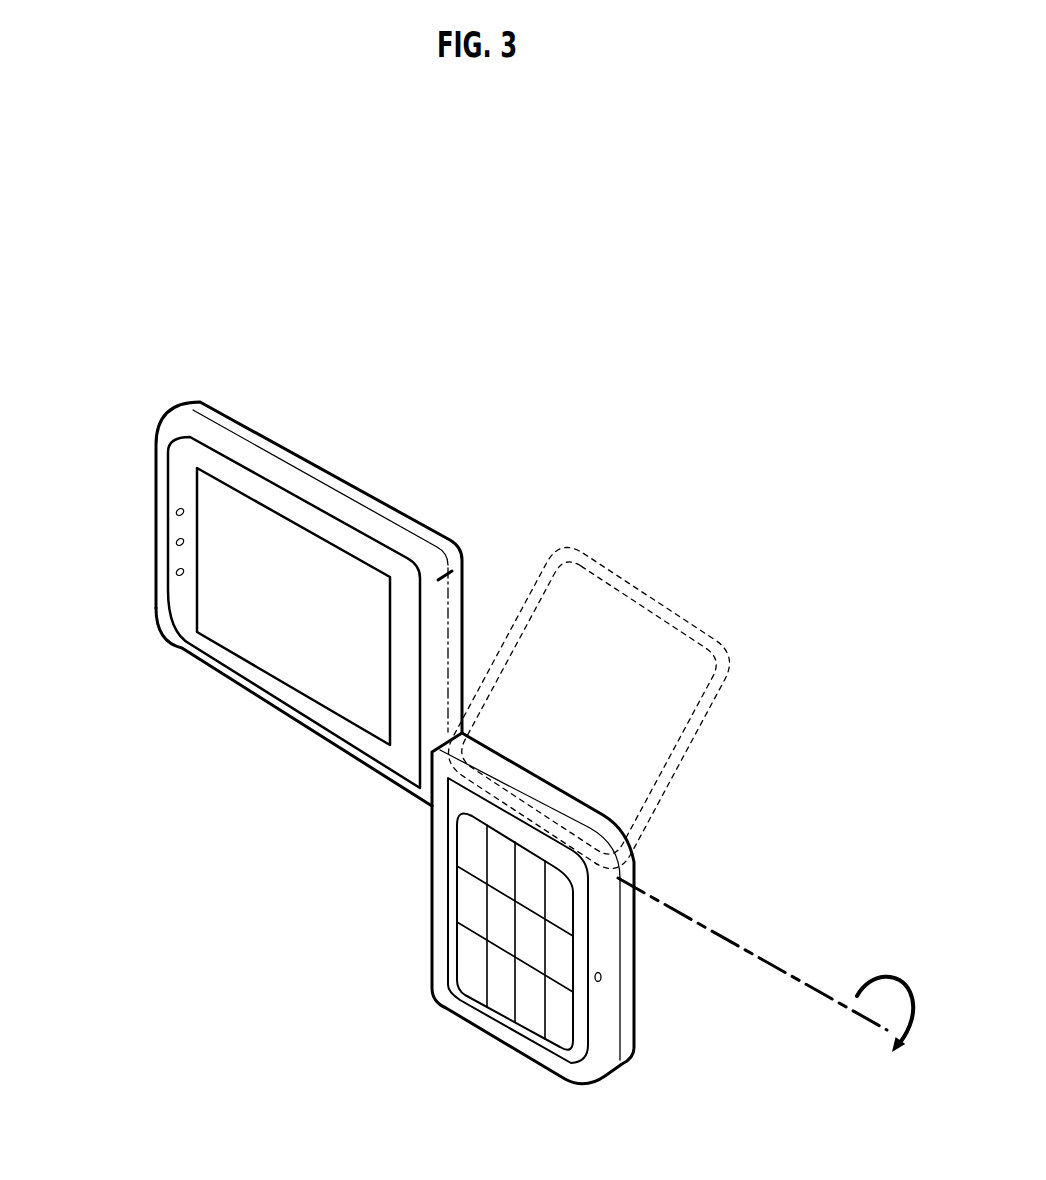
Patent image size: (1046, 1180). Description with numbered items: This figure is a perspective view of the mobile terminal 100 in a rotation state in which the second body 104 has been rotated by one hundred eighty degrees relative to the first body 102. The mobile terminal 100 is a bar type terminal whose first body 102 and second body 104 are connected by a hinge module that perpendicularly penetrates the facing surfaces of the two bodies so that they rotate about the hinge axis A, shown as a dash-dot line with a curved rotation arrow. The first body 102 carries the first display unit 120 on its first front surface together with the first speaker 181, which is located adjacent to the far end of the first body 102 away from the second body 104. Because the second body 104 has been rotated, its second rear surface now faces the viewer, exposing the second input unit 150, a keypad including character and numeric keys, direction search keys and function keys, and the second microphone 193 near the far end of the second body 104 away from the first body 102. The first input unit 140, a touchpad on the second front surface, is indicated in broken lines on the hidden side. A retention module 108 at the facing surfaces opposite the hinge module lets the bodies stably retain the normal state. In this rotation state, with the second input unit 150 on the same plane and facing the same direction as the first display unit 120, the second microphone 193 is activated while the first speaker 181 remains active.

The mobile terminal 100 is at (584, 438).
The first body 102 is at (261, 724).
The second body 104 is at (499, 1050).
The retention module 108 is at (463, 565).
The first display unit 120 is at (283, 537).
The first input unit 140 is at (647, 585).
The second input unit 150 is at (467, 903).
The first speaker 181 is at (175, 570).
The second microphone 193 is at (602, 980).
The hinge axis A is at (773, 962).